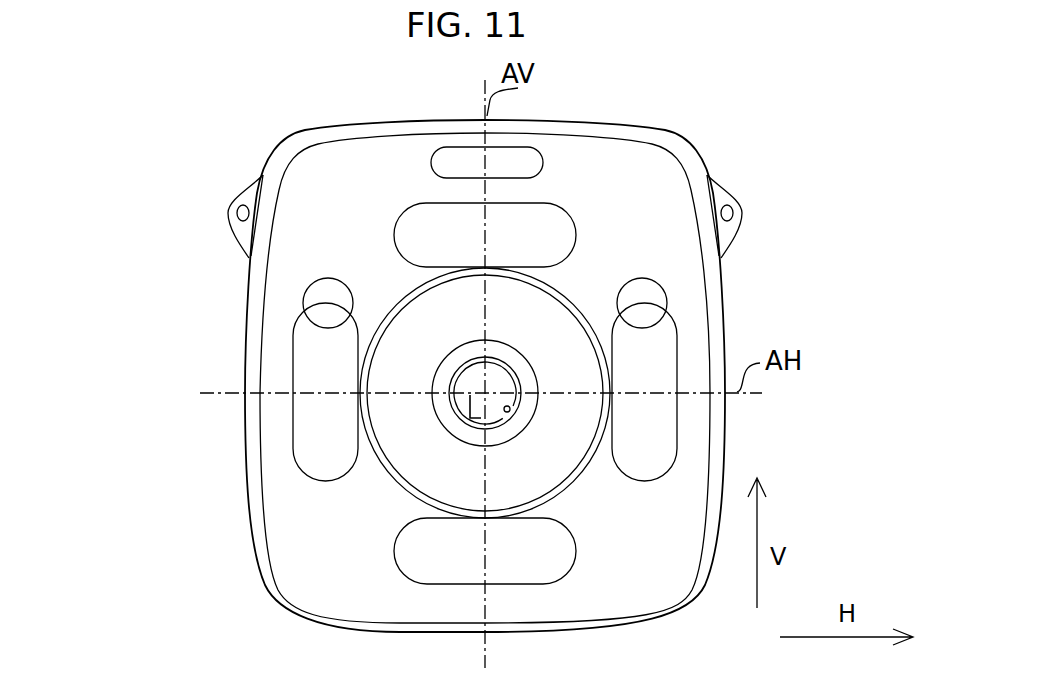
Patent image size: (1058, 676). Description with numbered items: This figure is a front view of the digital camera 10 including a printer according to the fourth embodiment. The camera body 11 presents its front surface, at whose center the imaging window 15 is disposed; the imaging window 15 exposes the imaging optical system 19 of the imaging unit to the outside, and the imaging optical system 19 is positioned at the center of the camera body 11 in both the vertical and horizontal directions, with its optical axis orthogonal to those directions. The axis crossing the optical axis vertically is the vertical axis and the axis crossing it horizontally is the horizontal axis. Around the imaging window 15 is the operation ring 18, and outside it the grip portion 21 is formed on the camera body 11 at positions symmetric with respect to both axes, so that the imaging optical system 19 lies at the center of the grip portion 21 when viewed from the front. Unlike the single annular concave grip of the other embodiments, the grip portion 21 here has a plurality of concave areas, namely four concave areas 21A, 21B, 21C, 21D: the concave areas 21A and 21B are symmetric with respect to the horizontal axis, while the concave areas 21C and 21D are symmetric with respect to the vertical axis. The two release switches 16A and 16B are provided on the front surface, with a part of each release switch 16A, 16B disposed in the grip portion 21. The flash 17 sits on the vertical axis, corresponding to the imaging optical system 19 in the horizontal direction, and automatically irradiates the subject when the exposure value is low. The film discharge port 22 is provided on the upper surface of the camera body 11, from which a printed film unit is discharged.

The digital camera including a printer 10 is at (118, 128).
The camera body 11 is at (278, 150).
The film discharge port 22 is at (557, 119).
The flash 17 is at (460, 160).
The concave area 21A is at (533, 233).
The concave area 21B is at (437, 553).
The concave area 21C is at (313, 363).
The concave area 21D is at (657, 363).
The grip portion 21 is at (489, 395).
The release switch 16A is at (296, 297).
The release switch 16B is at (674, 297).
The operation ring 18 is at (543, 480).
The imaging optical system 19 is at (472, 380).
The imaging window 15 is at (507, 408).